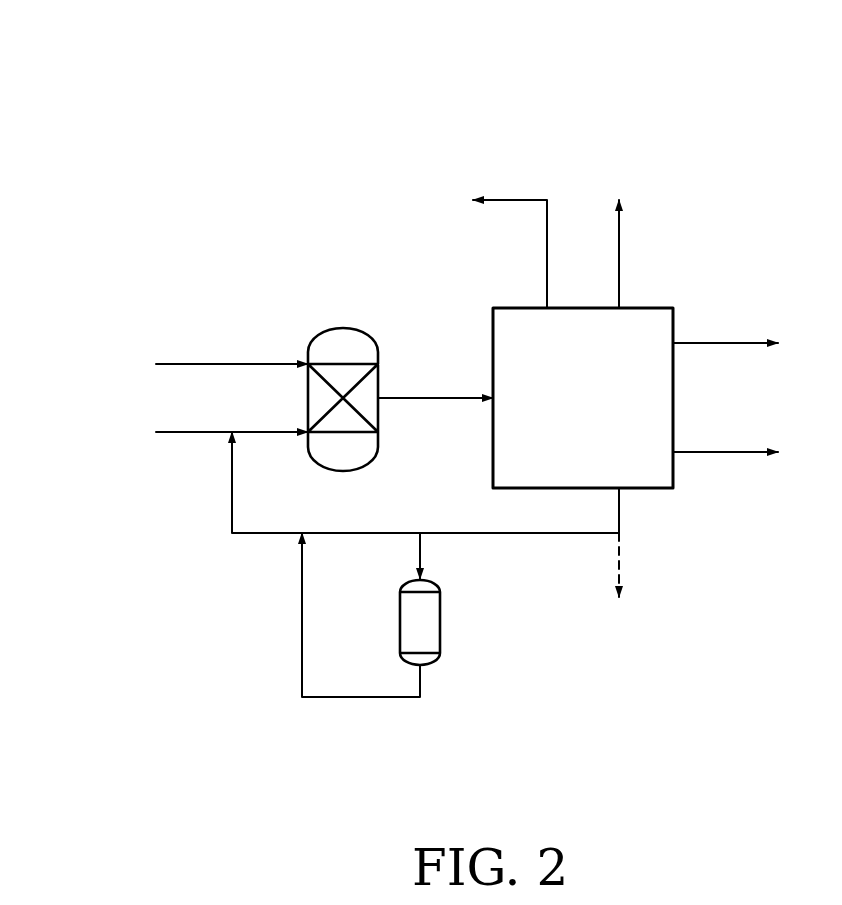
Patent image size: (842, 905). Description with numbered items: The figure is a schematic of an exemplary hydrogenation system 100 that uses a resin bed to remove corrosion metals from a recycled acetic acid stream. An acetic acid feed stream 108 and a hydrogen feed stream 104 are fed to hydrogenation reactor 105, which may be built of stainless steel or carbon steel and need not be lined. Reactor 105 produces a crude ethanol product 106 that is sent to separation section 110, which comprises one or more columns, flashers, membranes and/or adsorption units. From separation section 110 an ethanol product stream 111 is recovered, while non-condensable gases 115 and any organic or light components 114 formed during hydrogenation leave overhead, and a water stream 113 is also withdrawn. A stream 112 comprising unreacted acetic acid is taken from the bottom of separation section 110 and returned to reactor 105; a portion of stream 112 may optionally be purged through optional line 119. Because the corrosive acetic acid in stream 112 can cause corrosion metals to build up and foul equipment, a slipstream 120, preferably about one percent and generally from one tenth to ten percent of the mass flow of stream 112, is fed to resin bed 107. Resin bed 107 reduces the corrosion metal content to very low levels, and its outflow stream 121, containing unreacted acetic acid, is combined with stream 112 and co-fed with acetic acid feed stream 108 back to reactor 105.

The system 100 is at (668, 120).
The hydrogen feed stream 104 is at (218, 364).
The hydrogenation reactor 105 is at (342, 338).
The crude ethanol product 106 is at (428, 400).
The resin bed 107 is at (428, 625).
The acetic acid feed stream 108 is at (178, 440).
The separation section 110 is at (655, 322).
The ethanol product stream 111 is at (735, 345).
The stream comprising unreacted acetic acid 112 is at (619, 511).
The water stream 113 is at (738, 455).
The organic or light components 114 is at (619, 243).
The non-condensable gases 115 is at (512, 199).
The optional purge line 119 is at (619, 560).
The slipstream 120 is at (420, 548).
The outflow stream 121 is at (357, 698).